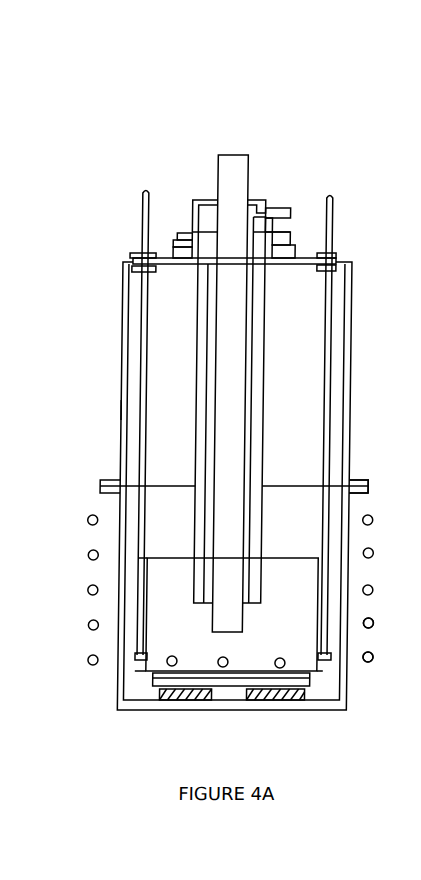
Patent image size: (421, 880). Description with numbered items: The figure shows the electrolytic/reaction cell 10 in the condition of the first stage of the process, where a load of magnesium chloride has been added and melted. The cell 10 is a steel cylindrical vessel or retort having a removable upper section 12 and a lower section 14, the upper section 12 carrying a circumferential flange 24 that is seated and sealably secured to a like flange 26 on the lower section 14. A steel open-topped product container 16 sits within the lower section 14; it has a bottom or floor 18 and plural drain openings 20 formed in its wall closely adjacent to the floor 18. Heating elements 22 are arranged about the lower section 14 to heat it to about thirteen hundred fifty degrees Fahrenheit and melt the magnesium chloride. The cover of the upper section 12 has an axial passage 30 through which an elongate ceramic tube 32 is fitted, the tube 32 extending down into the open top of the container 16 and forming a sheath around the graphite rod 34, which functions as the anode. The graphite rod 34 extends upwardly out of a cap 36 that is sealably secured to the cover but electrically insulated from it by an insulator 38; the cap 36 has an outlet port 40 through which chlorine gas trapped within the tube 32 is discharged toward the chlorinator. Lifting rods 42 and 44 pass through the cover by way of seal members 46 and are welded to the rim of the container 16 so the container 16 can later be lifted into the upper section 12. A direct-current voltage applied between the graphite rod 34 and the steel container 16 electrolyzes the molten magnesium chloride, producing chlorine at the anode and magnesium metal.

The electrolytic/reaction cell 10 is at (362, 357).
The upper section 12 is at (123, 362).
The lower section 14 is at (356, 546).
The product container 16 is at (176, 559).
The bottom or floor 18 is at (305, 673).
The drain openings 20 is at (228, 657).
The heating elements 22 is at (386, 640).
The circumferential flange 24 is at (365, 478).
The flange 26 is at (368, 494).
The axial passage 30 is at (199, 272).
The ceramic tube 32 is at (268, 298).
The graphite rod 34 is at (249, 163).
The cap 36 is at (257, 198).
The insulator 38 is at (174, 243).
The outlet port 40 is at (290, 207).
The lifting rod 42 is at (142, 212).
The lifting rod 44 is at (331, 204).
The seal members 46 is at (140, 255).